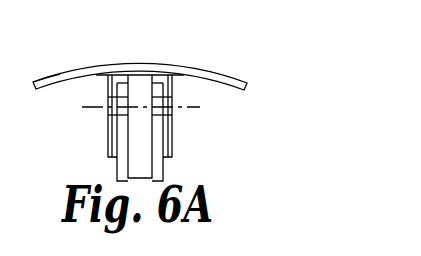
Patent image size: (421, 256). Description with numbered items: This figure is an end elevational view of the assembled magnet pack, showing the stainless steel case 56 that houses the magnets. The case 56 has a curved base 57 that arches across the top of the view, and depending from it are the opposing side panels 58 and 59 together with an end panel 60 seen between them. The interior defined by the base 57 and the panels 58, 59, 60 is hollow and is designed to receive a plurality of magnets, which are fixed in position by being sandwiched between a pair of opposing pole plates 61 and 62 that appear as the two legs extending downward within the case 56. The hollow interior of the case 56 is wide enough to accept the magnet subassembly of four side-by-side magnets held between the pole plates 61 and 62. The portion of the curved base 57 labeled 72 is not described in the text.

The stainless steel case 56 is at (182, 51).
The curved base 57 is at (223, 78).
The side panel 58 is at (107, 137).
The side panel 59 is at (170, 143).
The end panel 60 is at (138, 92).
The pole plate 61 is at (120, 157).
The pole plate 62 is at (158, 158).
The plate end portion 72 is at (47, 78).